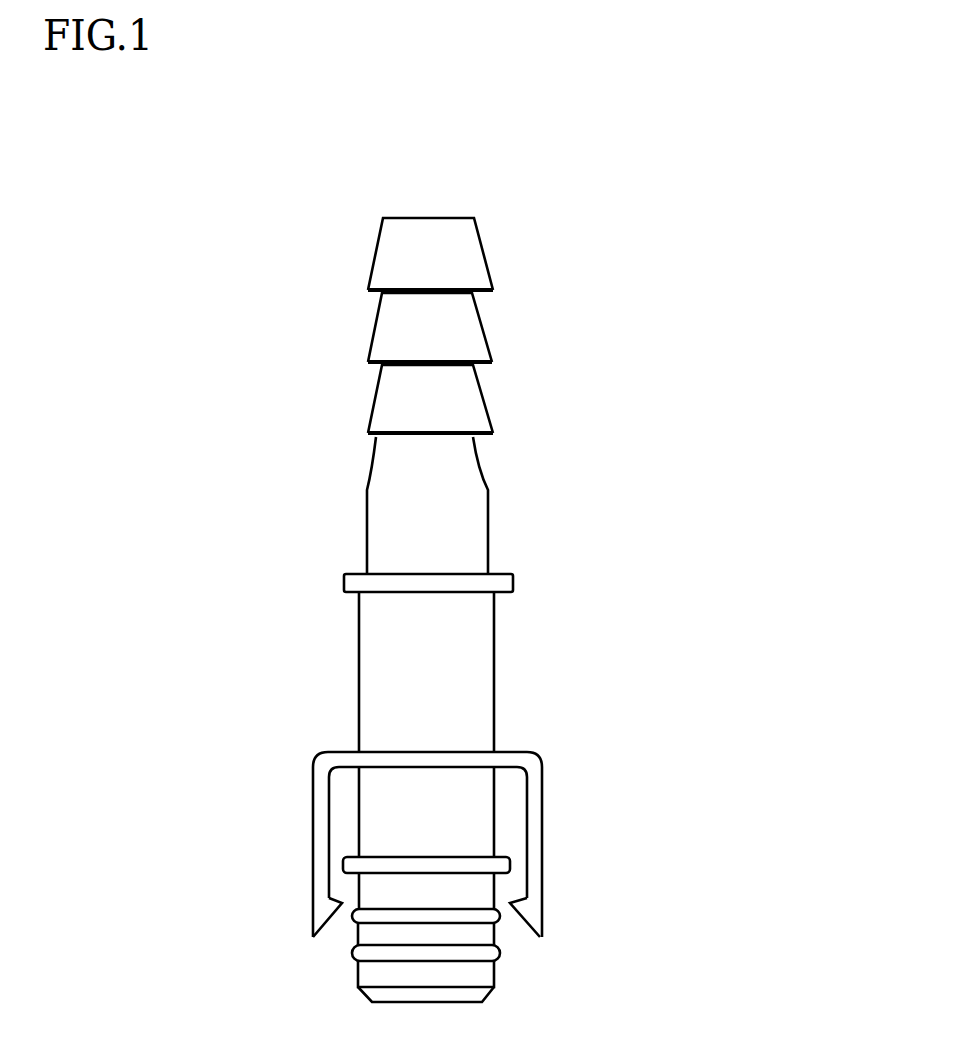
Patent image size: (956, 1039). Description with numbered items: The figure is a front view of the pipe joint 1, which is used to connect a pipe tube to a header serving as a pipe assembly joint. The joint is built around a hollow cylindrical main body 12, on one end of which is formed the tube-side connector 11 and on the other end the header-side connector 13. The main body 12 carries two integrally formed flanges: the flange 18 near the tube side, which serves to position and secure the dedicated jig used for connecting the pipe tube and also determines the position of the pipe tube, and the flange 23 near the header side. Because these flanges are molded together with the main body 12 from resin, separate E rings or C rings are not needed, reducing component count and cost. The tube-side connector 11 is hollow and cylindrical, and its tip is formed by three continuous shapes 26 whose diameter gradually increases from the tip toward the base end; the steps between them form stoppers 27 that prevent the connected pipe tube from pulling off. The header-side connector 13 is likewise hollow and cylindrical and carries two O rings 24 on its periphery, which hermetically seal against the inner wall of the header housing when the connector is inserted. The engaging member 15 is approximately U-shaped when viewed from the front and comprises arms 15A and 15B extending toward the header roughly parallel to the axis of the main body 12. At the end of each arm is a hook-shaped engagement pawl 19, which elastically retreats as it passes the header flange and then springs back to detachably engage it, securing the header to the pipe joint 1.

The pipe joint 1 is at (762, 245).
The tube-side connector 11 is at (472, 508).
The main body 12 is at (495, 637).
The header-side connector 13 is at (472, 973).
The engaging member 15 is at (451, 844).
The arm 15A is at (533, 837).
The arm 15B is at (312, 833).
The flange 18 is at (500, 582).
The engagement pawl 19 is at (318, 912).
The flange 23 is at (507, 867).
The O ring 24 is at (355, 915).
The continuous shape 26 is at (470, 257).
The stopper 27 is at (370, 291).